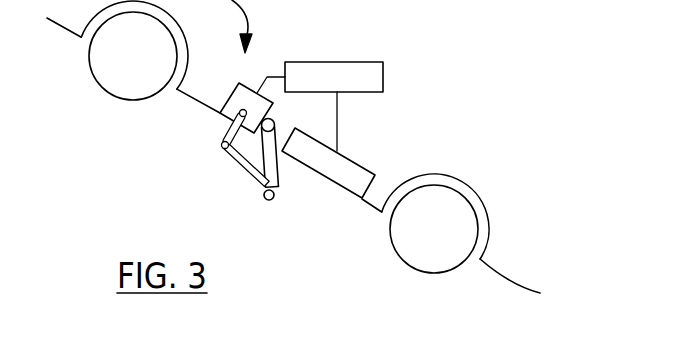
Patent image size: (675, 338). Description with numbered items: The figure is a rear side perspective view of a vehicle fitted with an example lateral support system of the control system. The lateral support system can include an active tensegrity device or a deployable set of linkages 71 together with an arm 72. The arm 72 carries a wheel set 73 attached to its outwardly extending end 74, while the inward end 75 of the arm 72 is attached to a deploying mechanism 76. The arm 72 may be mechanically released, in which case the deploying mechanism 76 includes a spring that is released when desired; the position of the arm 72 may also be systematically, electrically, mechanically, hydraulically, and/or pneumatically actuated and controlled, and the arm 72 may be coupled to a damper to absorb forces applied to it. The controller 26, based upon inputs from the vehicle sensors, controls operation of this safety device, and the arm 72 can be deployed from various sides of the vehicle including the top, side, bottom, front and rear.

The controller 26 is at (335, 61).
The deployable set of linkages 71 is at (222, 157).
The arm 72 is at (278, 168).
The wheel set 73 is at (265, 200).
The outwardly extending end 74 is at (262, 183).
The inward end 75 is at (278, 121).
The deploying mechanism 76 is at (232, 90).